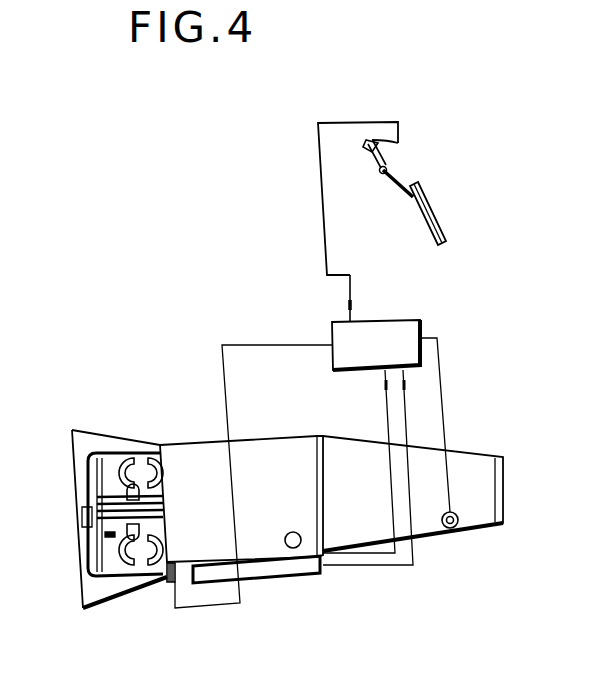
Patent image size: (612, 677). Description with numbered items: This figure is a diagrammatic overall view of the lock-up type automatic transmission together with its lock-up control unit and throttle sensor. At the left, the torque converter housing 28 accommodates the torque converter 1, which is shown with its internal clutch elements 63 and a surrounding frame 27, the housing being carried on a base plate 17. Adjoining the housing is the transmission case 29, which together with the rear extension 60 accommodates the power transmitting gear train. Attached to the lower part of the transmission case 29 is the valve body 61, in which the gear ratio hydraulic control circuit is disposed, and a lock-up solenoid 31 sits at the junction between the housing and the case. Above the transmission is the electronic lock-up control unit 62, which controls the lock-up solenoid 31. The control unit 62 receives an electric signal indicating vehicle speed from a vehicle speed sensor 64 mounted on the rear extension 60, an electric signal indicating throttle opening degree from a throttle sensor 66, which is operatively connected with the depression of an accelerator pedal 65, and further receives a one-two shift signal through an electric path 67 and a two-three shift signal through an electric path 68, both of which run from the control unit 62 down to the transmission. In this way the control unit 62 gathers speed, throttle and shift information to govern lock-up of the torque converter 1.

The torque converter 1 is at (142, 457).
The base plate 17 is at (88, 612).
The clip frame 27 is at (97, 487).
The torque converter housing 28 is at (88, 431).
The transmission case 29 is at (195, 441).
The lock-up solenoid 31 is at (160, 587).
The rear extension 60 is at (477, 455).
The valve body 61 is at (277, 582).
The electronic lock-up control unit 62 is at (420, 320).
The clip elements 63 is at (108, 467).
The vehicle speed sensor 64 is at (457, 528).
The pedal 65 is at (428, 207).
The throttle sensor 66 is at (400, 150).
The electric path 67 is at (360, 563).
The electric path 68 is at (403, 567).